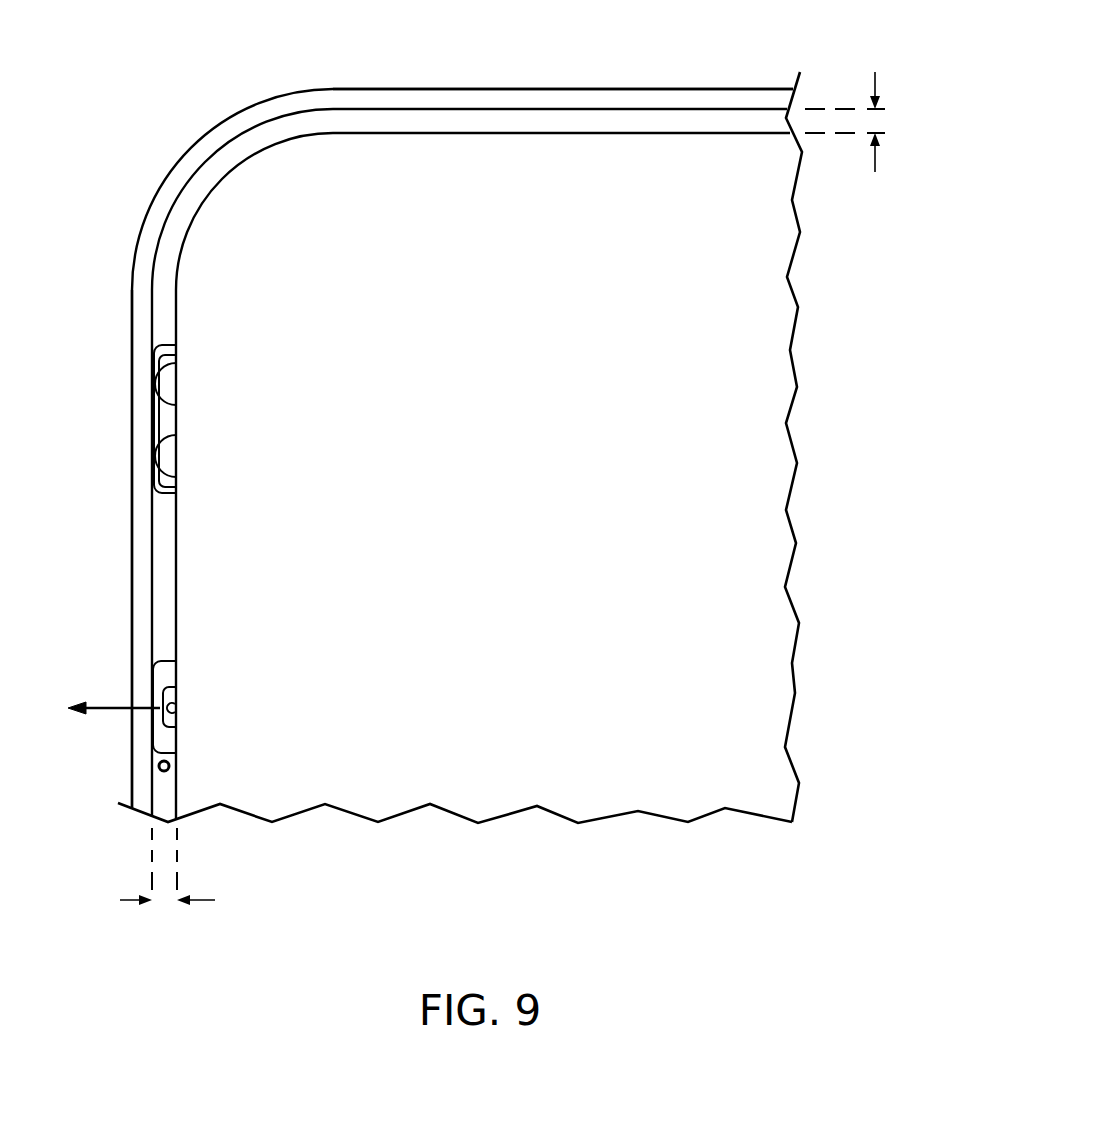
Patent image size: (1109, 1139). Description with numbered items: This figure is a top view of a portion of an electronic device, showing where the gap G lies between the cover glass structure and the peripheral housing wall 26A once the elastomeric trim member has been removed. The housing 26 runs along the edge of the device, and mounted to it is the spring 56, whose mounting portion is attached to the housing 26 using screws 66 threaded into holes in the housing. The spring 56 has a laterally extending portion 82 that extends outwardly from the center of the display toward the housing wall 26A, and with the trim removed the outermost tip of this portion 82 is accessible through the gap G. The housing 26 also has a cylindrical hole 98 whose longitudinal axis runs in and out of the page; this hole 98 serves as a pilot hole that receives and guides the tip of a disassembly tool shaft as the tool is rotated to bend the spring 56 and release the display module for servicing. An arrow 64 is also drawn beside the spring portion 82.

The housing 26 is at (512, 109).
The housing wall 26A is at (705, 88).
The spring 56 is at (158, 355).
The screws 66 is at (162, 393).
The laterally extending portion 82 is at (162, 693).
The light emission direction 64 is at (110, 708).
The hole 98 is at (157, 765).
The gap G is at (517, 510).